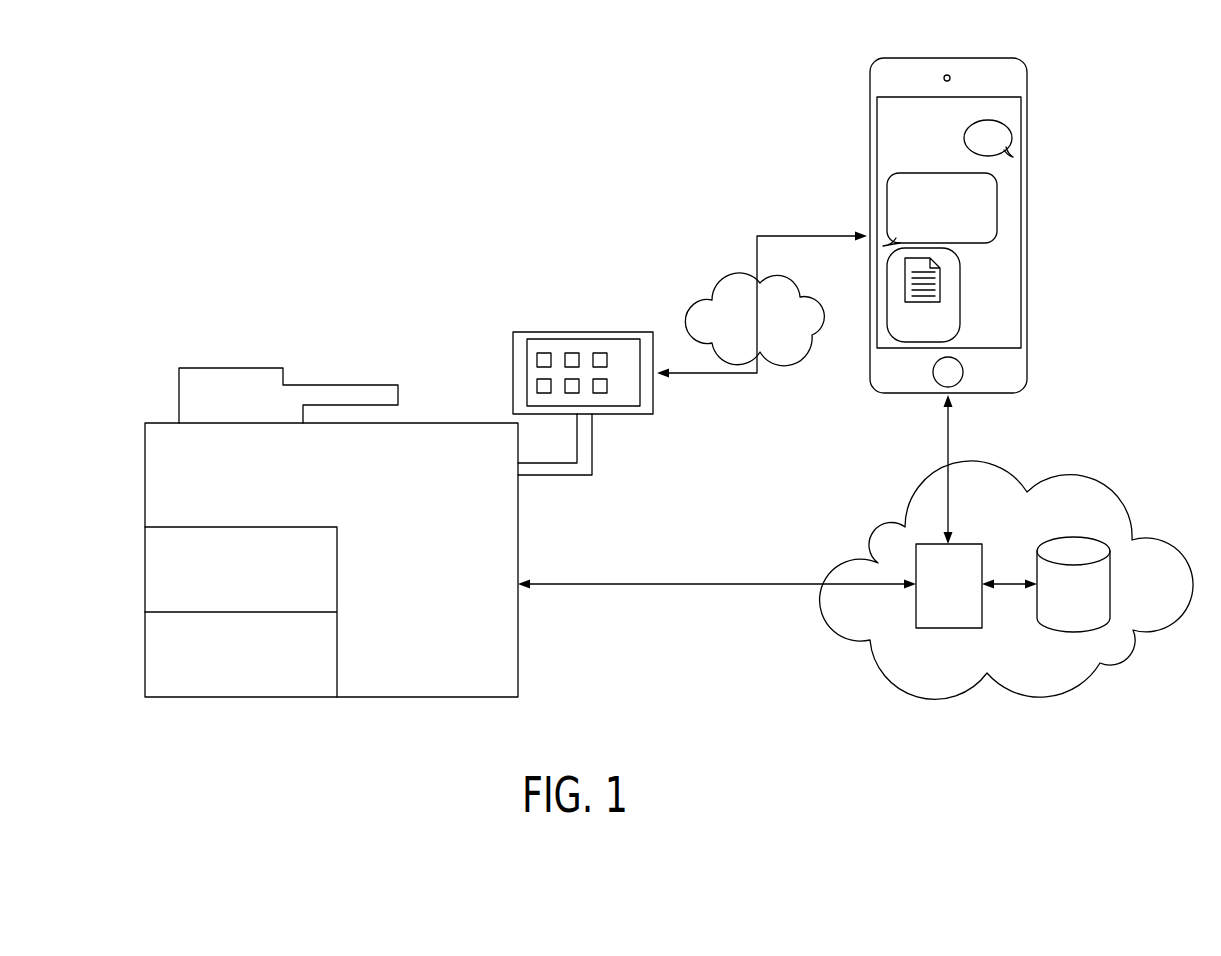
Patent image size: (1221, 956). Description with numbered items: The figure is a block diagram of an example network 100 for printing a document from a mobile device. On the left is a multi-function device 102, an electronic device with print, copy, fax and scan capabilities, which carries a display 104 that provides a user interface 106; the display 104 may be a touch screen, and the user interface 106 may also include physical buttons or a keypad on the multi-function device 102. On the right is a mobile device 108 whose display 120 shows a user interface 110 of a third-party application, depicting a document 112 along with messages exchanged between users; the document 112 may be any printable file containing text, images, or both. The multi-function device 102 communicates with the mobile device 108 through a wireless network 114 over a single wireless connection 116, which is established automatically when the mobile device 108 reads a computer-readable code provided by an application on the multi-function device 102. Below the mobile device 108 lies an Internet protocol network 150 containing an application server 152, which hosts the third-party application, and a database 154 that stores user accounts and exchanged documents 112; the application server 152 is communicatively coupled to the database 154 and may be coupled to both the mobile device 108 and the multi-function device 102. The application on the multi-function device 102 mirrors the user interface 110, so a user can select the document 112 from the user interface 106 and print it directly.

The network 100 is at (212, 206).
The multi-function device 102 is at (213, 378).
The display 104 is at (548, 332).
The user interface 106 is at (600, 352).
The mobile device 108 is at (870, 153).
The user interface 110 is at (1010, 113).
The document 112 is at (940, 283).
The wireless network 114 is at (735, 272).
The wireless connection 116 is at (712, 374).
The display 120 is at (1025, 217).
The Internet protocol network 150 is at (1072, 478).
The application server 152 is at (950, 628).
The database 154 is at (1070, 632).